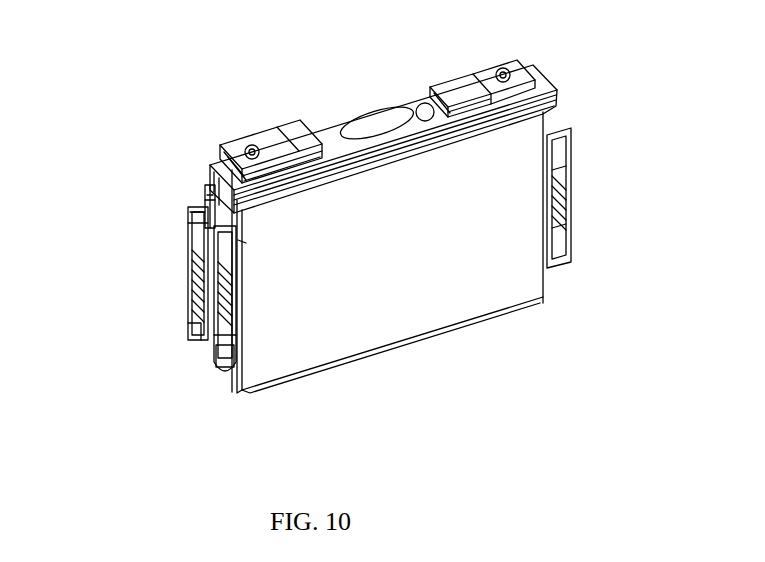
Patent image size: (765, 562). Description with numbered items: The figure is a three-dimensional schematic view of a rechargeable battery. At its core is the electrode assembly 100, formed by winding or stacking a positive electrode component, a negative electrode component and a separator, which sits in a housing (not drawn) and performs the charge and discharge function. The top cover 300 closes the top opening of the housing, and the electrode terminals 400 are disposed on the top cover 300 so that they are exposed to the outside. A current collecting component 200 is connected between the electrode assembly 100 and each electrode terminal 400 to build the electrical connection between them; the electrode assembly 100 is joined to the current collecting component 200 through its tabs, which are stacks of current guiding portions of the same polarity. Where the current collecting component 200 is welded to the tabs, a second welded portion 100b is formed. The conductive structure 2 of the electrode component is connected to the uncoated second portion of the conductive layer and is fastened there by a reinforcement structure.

The electrode assembly 100 is at (370, 306).
The second welded portion 100b is at (185, 298).
The current collecting component 200 is at (210, 203).
The top cover 300 is at (333, 127).
The electrode terminal 400 is at (248, 148).
The conductive structure 2 is at (188, 212).